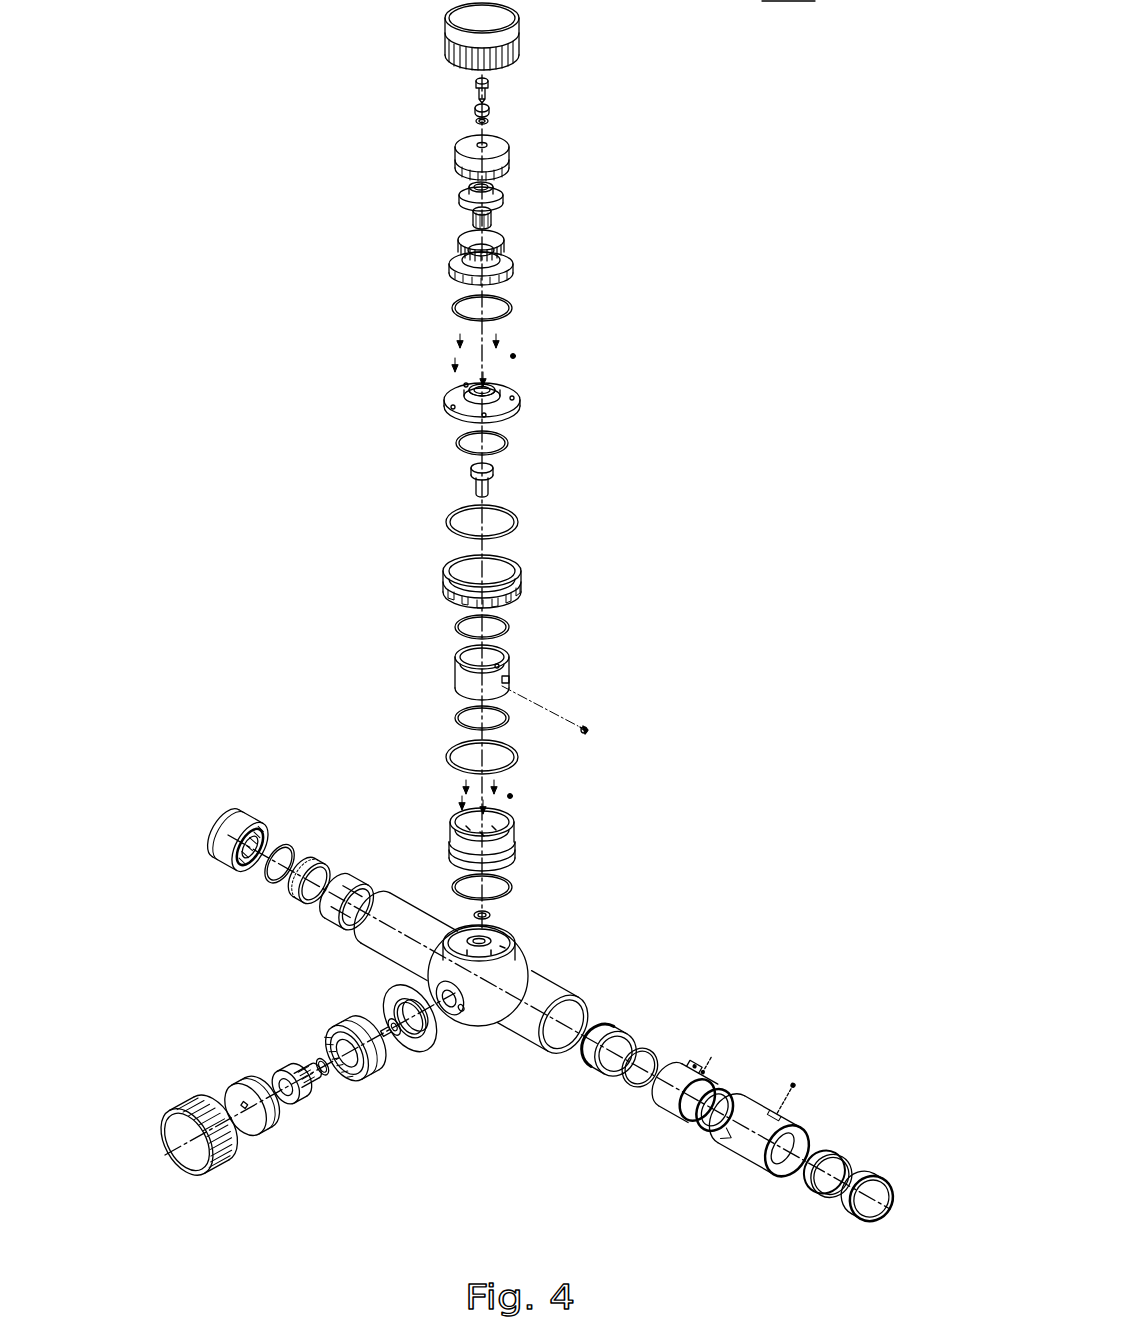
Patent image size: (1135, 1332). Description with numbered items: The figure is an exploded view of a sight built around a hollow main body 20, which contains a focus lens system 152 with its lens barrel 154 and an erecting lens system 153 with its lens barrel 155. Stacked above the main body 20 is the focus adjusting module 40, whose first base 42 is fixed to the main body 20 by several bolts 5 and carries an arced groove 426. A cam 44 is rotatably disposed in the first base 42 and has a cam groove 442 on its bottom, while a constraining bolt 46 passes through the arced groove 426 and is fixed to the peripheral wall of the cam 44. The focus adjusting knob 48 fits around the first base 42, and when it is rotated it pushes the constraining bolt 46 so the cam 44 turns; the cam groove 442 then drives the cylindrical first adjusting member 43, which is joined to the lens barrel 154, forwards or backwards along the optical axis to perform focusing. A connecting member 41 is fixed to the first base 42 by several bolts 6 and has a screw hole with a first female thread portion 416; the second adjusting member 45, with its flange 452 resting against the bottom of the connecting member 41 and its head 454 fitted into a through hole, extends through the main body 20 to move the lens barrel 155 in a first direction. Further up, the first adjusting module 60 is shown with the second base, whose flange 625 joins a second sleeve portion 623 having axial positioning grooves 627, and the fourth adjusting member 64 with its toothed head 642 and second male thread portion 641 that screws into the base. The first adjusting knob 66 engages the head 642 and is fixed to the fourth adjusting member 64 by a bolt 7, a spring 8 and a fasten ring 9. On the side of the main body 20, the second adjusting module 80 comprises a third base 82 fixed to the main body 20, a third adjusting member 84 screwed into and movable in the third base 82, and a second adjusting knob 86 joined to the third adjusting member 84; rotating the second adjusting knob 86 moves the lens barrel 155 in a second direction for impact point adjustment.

The first adjusting module 60 is at (292, 288).
The bolt 7 is at (506, 76).
The spring 8 is at (476, 83).
The fasten ring 9 is at (475, 109).
The first adjusting knob 66 is at (464, 143).
The fourth adjusting member 64 is at (545, 186).
The head 642 is at (462, 190).
The second male thread portion 641 is at (466, 206).
The second sleeve portion 623 is at (512, 267).
The positioning grooves 627 is at (460, 236).
The flange 625 is at (458, 270).
The bolts 6 is at (516, 358).
The focus adjusting module 40 is at (292, 762).
The connecting member 41 is at (417, 368).
The first female thread portion 416 is at (466, 389).
The second adjusting member 45 is at (517, 465).
The head 454 is at (464, 446).
The flange 452 is at (470, 476).
The focus adjusting knob 48 is at (444, 576).
The cam 44 is at (501, 668).
The cam groove 442 is at (502, 656).
The constraining bolt 46 is at (587, 729).
The bolts 5 is at (512, 796).
The first base 42 is at (516, 794).
The arced groove 426 is at (510, 846).
The main body 20 is at (531, 1010).
The first adjusting member 43 is at (504, 950).
The erecting lens system 153 is at (266, 860).
The lens barrel 155 is at (306, 890).
The focus lens system 152 is at (729, 1118).
The lens barrel 154 is at (668, 1102).
The second adjusting module 80 is at (285, 1090).
The third base 82 is at (365, 1060).
The third adjusting member 84 is at (297, 1100).
The second adjusting knob 86 is at (253, 1120).